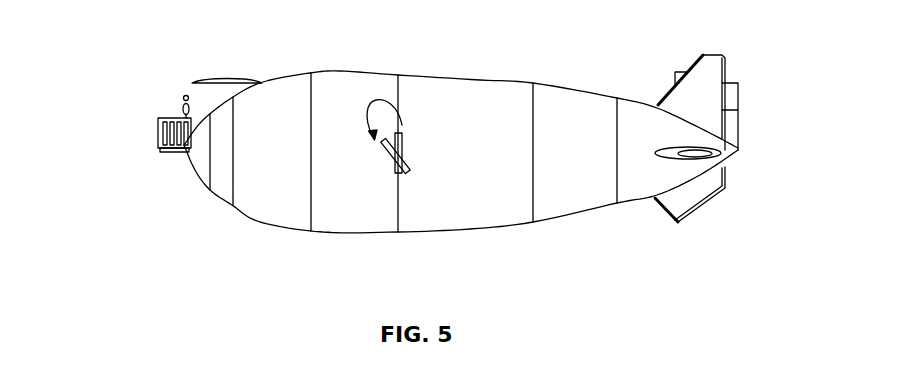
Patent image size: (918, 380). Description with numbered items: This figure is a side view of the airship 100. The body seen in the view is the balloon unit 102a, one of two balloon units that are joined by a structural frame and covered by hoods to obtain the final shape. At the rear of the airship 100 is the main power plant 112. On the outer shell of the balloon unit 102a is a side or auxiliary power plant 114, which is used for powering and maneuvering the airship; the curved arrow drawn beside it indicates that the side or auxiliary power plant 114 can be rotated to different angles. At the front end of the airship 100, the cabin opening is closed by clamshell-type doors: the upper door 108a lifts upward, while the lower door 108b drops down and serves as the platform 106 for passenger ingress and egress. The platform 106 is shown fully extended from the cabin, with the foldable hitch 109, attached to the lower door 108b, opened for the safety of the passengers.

The airship 100 is at (429, 137).
The balloon unit 102a is at (285, 215).
The platform 106 is at (120, 151).
The upper door 108a is at (218, 78).
The lower door 108b is at (172, 152).
The hitch 109 is at (168, 120).
The main power plant 112 is at (733, 93).
The side or auxiliary power plant 114 is at (402, 147).